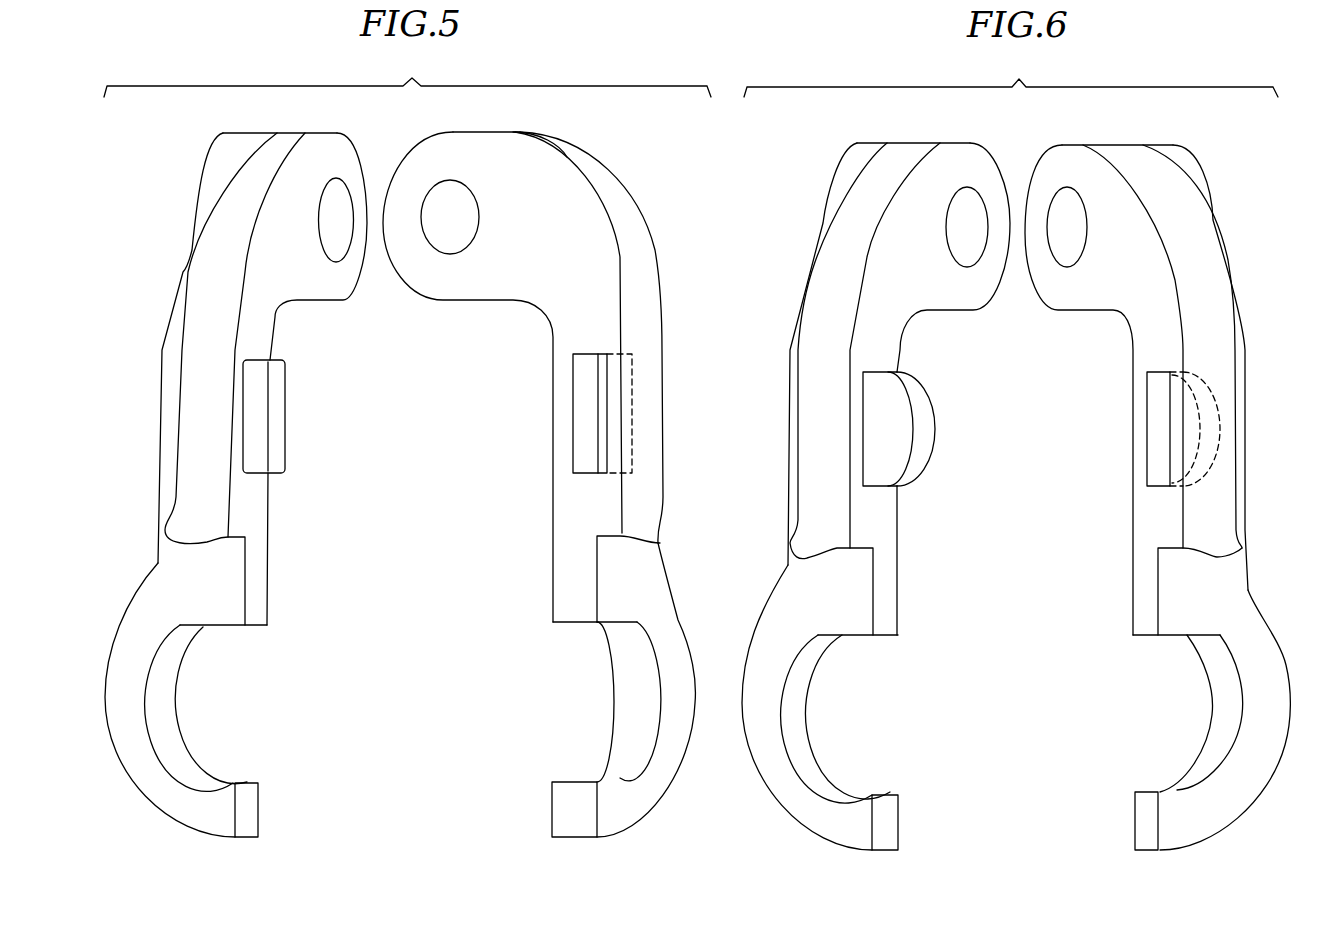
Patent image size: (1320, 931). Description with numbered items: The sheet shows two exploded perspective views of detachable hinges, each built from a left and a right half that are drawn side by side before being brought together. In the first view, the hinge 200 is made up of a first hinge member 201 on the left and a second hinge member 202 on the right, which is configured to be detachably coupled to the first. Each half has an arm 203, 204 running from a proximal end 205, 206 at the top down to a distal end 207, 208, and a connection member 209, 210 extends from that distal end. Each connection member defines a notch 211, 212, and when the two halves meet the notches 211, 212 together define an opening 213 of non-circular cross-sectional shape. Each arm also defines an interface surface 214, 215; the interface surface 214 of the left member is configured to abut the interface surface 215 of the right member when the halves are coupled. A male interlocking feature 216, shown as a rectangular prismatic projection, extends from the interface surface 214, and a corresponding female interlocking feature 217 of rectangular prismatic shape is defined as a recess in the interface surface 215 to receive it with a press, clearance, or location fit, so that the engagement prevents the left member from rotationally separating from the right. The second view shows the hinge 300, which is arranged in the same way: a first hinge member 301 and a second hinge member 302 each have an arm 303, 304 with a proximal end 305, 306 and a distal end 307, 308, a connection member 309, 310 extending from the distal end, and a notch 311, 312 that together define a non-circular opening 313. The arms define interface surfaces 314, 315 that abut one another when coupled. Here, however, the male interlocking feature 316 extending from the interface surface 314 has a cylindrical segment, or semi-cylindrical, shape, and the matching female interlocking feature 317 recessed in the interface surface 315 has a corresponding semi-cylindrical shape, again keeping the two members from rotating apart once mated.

In FIG. 5, the hinge 200 is at (412, 78).
In FIG. 5, the first hinge member 201 is at (295, 537).
In FIG. 5, the second hinge member 202 is at (510, 473).
In FIG. 5, the arm 203 is at (207, 318).
In FIG. 5, the arm 204 is at (630, 285).
In FIG. 5, the proximal end 205 is at (288, 140).
In FIG. 5, the proximal end 206 is at (517, 142).
In FIG. 5, the distal end 207 is at (162, 565).
In FIG. 5, the distal end 208 is at (643, 557).
In FIG. 5, the connection member 209 is at (133, 648).
In FIG. 5, the connection member 210 is at (665, 623).
In FIG. 5, the notch 211 is at (240, 679).
In FIG. 5, the notch 212 is at (565, 717).
In FIG. 5, the opening 213 is at (340, 783).
In FIG. 5, the interface surface 214 is at (309, 285).
In FIG. 5, the interface surface 215 is at (570, 282).
In FIG. 5, the male interlocking feature 216 is at (275, 415).
In FIG. 5, the female interlocking feature 217 is at (590, 400).
In FIG. 6, the hinge 300 is at (1019, 79).
In FIG. 6, the first hinge member 301 is at (930, 557).
In FIG. 6, the second hinge member 302 is at (1100, 507).
In FIG. 6, the arm 303 is at (820, 318).
In FIG. 6, the arm 304 is at (1203, 278).
In FIG. 6, the proximal end 305 is at (907, 155).
In FIG. 6, the proximal end 306 is at (1122, 153).
In FIG. 6, the distal end 307 is at (790, 582).
In FIG. 6, the distal end 308 is at (1203, 572).
In FIG. 6, the connection member 309 is at (765, 658).
In FIG. 6, the connection member 310 is at (1247, 640).
In FIG. 6, the notch 311 is at (877, 702).
In FIG. 6, the notch 312 is at (1153, 710).
In FIG. 6, the opening 313 is at (1000, 813).
In FIG. 6, the interface surface 314 is at (936, 289).
In FIG. 6, the interface surface 315 is at (1141, 287).
In FIG. 6, the male interlocking feature 316 is at (917, 403).
In FIG. 6, the female interlocking feature 317 is at (1160, 453).